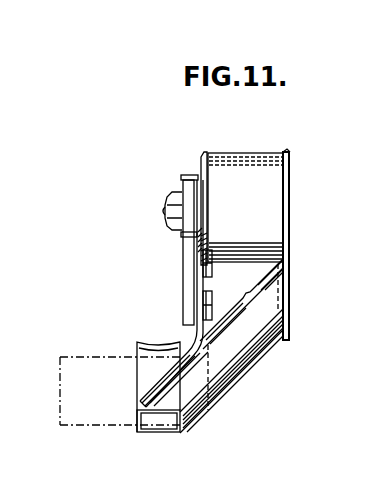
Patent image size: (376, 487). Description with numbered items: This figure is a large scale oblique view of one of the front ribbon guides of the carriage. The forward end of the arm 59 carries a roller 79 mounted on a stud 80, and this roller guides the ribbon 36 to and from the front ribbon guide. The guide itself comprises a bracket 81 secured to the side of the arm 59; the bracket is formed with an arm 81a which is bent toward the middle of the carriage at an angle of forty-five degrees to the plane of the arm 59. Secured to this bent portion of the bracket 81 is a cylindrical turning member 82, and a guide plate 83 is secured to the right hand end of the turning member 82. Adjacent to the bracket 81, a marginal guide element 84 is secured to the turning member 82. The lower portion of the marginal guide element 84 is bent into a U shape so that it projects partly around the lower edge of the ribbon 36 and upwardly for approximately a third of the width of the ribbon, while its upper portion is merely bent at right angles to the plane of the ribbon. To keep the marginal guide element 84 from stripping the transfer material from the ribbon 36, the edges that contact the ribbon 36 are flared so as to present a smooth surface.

The ribbon 36 is at (94, 356).
The roller 79 is at (255, 170).
The stud 80 is at (168, 210).
The arm 59 is at (182, 257).
The bracket 81 is at (190, 336).
The arm 81a is at (150, 381).
The cylindrical turning member 82 is at (263, 310).
The guide plate 83 is at (290, 271).
The marginal guide element 84 is at (157, 423).